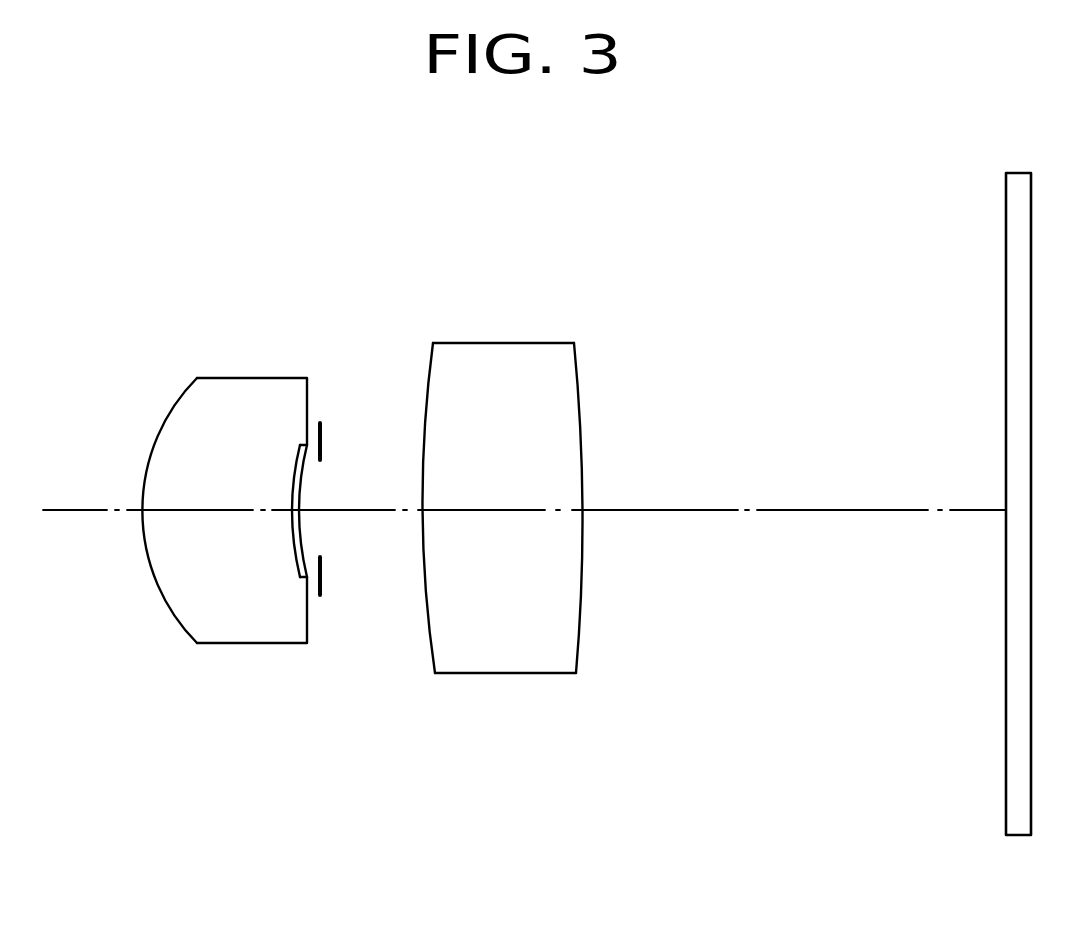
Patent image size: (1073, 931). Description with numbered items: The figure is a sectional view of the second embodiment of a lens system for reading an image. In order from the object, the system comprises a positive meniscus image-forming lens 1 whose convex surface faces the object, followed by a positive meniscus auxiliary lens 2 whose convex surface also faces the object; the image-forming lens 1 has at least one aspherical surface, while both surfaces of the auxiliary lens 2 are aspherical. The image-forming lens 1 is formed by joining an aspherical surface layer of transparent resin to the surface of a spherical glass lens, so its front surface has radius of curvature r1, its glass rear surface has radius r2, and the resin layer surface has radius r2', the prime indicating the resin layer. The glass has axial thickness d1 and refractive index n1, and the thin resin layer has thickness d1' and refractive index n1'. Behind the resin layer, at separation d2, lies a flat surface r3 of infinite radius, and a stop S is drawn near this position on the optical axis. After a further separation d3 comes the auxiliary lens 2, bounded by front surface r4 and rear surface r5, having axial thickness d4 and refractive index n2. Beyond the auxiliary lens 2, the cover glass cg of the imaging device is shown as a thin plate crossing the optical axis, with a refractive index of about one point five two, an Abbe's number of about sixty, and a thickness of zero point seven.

The image-forming lens 1 is at (220, 395).
The auxiliary lens 2 is at (503, 367).
The radius of curvature of the first surface r1 is at (168, 418).
The radius of curvature of the second surface r2 is at (284, 433).
The radius of curvature of the resin layer surface r2' is at (331, 433).
The radius of curvature of the third surface r3 is at (330, 443).
The radius of curvature of the fourth surface r4 is at (432, 380).
The radius of curvature of the fifth surface r5 is at (580, 383).
The surface separation of the first lens d1 is at (203, 629).
The surface separation of the resin layer d1' is at (271, 629).
The second surface separation d2 is at (300, 511).
The third surface separation d3 is at (377, 511).
The fourth surface separation d4 is at (515, 511).
The refractive index of the first lens n1 is at (221, 449).
The refractive index of the resin layer n1' is at (353, 454).
The refractive index of the second lens n2 is at (508, 448).
The aperture stop S is at (322, 583).
The cover glass cg is at (1017, 690).